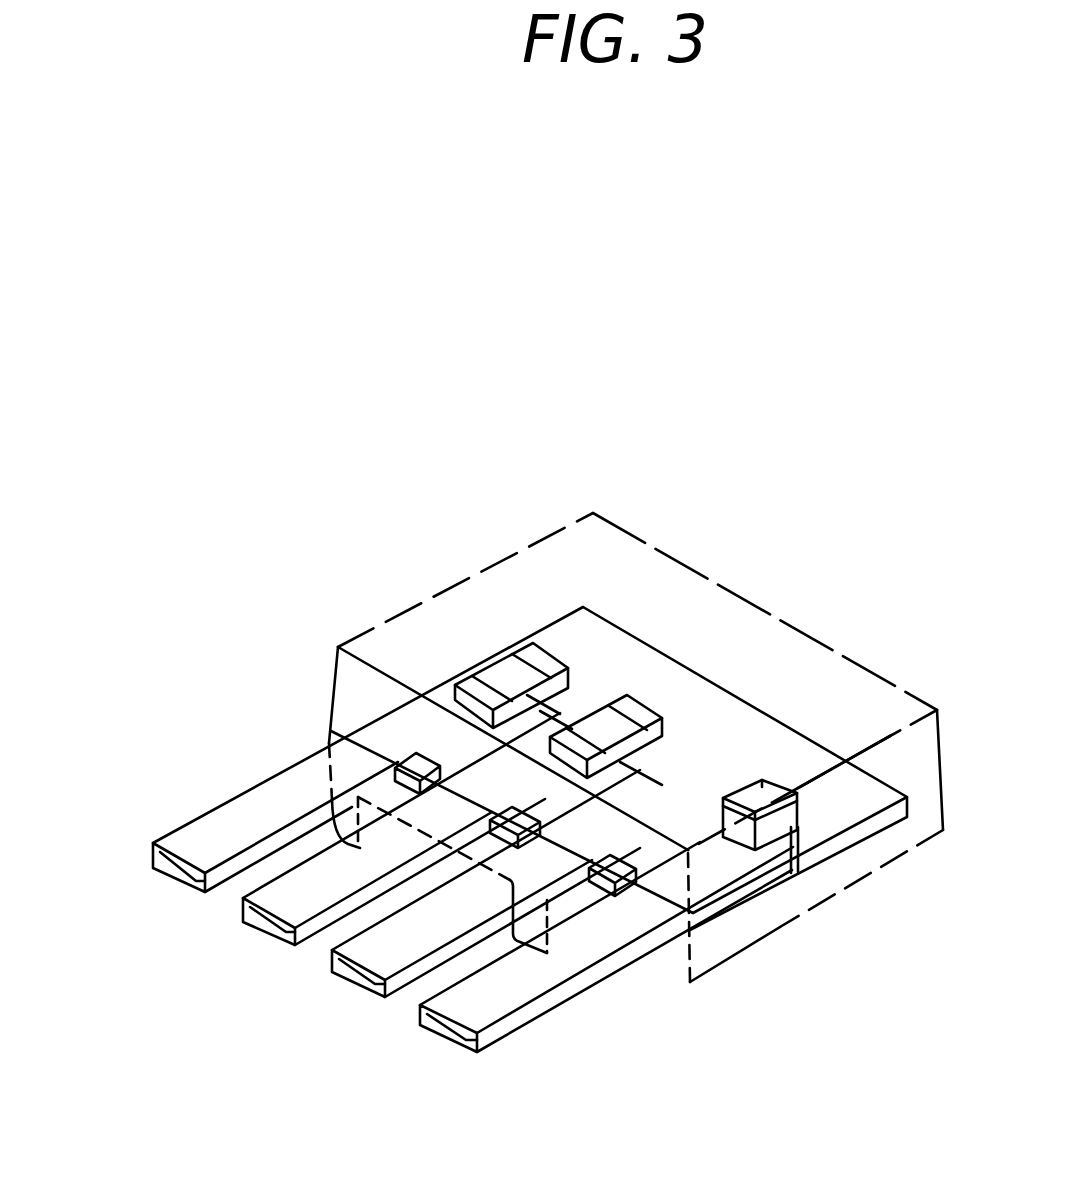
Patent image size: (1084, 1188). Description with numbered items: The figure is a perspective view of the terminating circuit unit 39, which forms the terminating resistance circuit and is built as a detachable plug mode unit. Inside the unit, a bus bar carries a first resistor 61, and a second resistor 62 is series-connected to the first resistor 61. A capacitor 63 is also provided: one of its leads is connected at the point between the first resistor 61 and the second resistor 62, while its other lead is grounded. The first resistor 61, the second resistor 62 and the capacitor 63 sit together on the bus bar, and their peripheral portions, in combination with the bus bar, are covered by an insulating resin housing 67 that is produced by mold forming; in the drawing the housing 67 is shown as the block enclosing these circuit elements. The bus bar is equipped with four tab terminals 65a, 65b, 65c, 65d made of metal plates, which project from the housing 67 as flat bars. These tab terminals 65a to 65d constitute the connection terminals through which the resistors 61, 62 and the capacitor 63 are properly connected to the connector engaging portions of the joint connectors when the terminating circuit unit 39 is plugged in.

The terminating circuit unit 39 is at (343, 623).
The first resistor 61 is at (565, 697).
The second resistor 62 is at (665, 744).
The capacitor 63 is at (760, 794).
The tab terminal 65a is at (198, 853).
The tab terminal 65b is at (290, 908).
The tab terminal 65c is at (373, 963).
The tab terminal 65d is at (493, 1003).
The insulating resin housing 67 is at (838, 872).